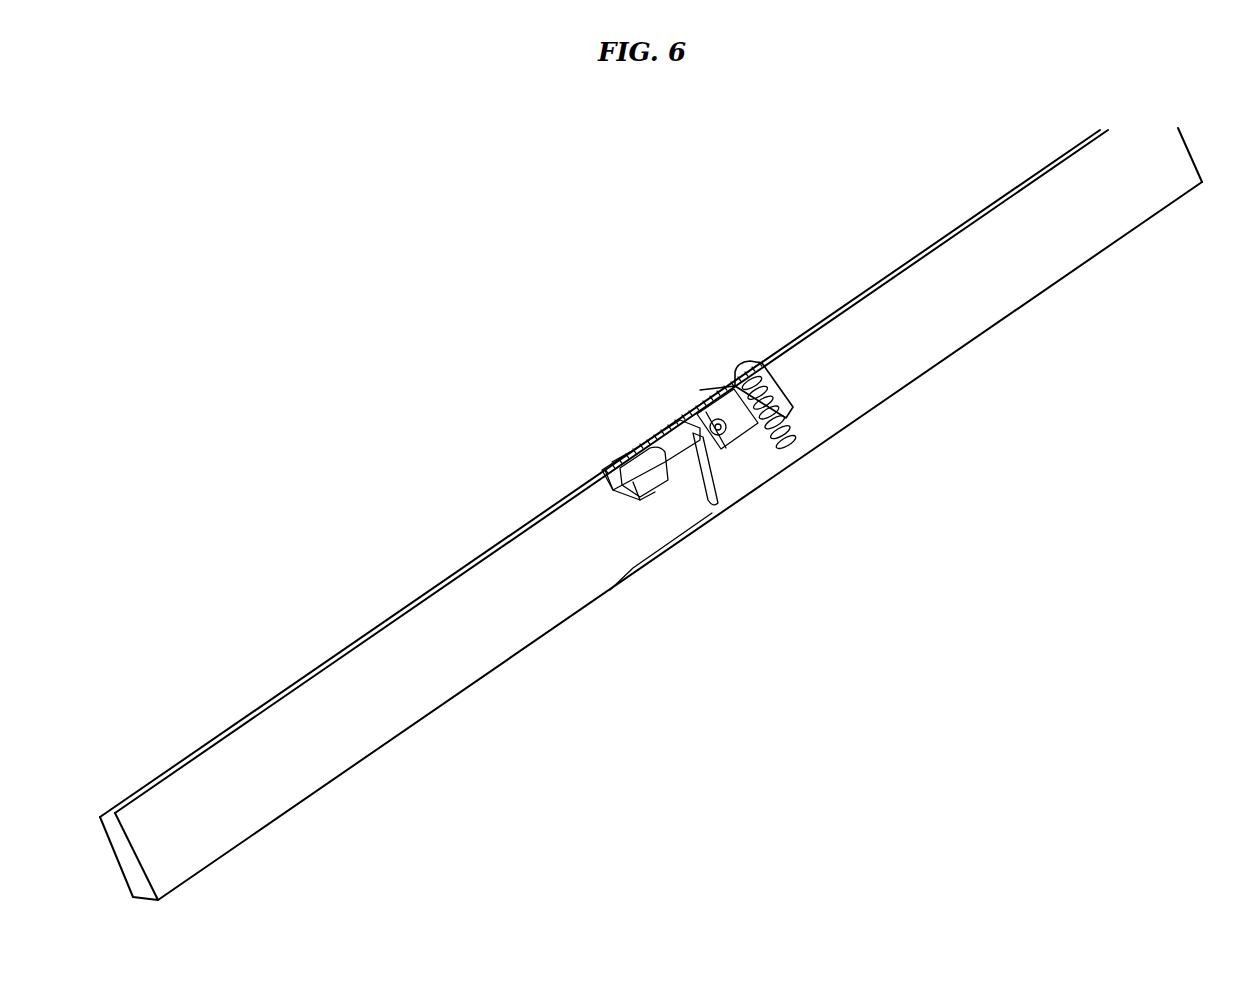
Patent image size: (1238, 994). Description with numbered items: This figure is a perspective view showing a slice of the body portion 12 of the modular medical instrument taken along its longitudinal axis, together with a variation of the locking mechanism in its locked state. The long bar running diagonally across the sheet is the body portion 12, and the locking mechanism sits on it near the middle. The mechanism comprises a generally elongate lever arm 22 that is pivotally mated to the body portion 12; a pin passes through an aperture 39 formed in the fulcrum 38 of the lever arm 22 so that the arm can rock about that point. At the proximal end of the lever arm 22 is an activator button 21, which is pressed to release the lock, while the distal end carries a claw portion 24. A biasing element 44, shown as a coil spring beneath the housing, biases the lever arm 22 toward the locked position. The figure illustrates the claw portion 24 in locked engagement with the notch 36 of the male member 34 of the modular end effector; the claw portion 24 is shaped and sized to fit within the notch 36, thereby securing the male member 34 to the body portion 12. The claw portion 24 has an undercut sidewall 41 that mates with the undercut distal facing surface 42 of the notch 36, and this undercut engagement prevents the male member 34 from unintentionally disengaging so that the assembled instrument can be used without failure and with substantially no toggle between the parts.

The body portion 12 is at (985, 280).
The activator button 21 is at (737, 363).
The lever arm 22 is at (672, 436).
The claw portion 24 is at (628, 470).
The male member 34 is at (662, 520).
The notch 36 is at (648, 500).
The fulcrum 38 is at (727, 448).
The aperture 39 is at (712, 420).
The undercut sidewall 41 is at (618, 463).
The distal facing surface 42 is at (672, 470).
The biasing element 44 is at (790, 431).